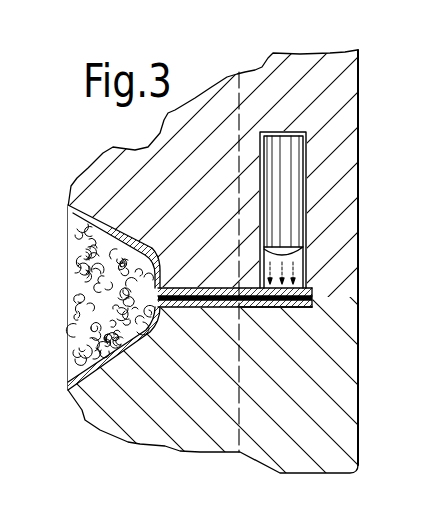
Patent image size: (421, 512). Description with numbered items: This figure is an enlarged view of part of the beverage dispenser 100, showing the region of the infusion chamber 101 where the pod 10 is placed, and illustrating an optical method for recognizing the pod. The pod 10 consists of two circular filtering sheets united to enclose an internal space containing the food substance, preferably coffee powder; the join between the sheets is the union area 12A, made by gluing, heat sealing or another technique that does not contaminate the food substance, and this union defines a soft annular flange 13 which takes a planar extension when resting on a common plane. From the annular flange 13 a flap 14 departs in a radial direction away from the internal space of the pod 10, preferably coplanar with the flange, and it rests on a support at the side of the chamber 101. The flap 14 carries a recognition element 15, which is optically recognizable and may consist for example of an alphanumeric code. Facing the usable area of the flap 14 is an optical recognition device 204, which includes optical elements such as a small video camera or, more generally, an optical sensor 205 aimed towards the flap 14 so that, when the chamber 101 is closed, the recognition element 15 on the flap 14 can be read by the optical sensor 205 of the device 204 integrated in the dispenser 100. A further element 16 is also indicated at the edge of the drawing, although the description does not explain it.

The beverage dispenser 100 is at (214, 89).
The infusion chamber 101 is at (100, 214).
The pod 10 is at (70, 308).
The union area 12A is at (193, 286).
The annular flange 13 is at (190, 308).
The flap 14 is at (270, 309).
The recognition element 15 is at (292, 308).
The optical recognition device 204 is at (305, 195).
The optical sensor 205 is at (305, 256).
The element 16 is at (417, 333).